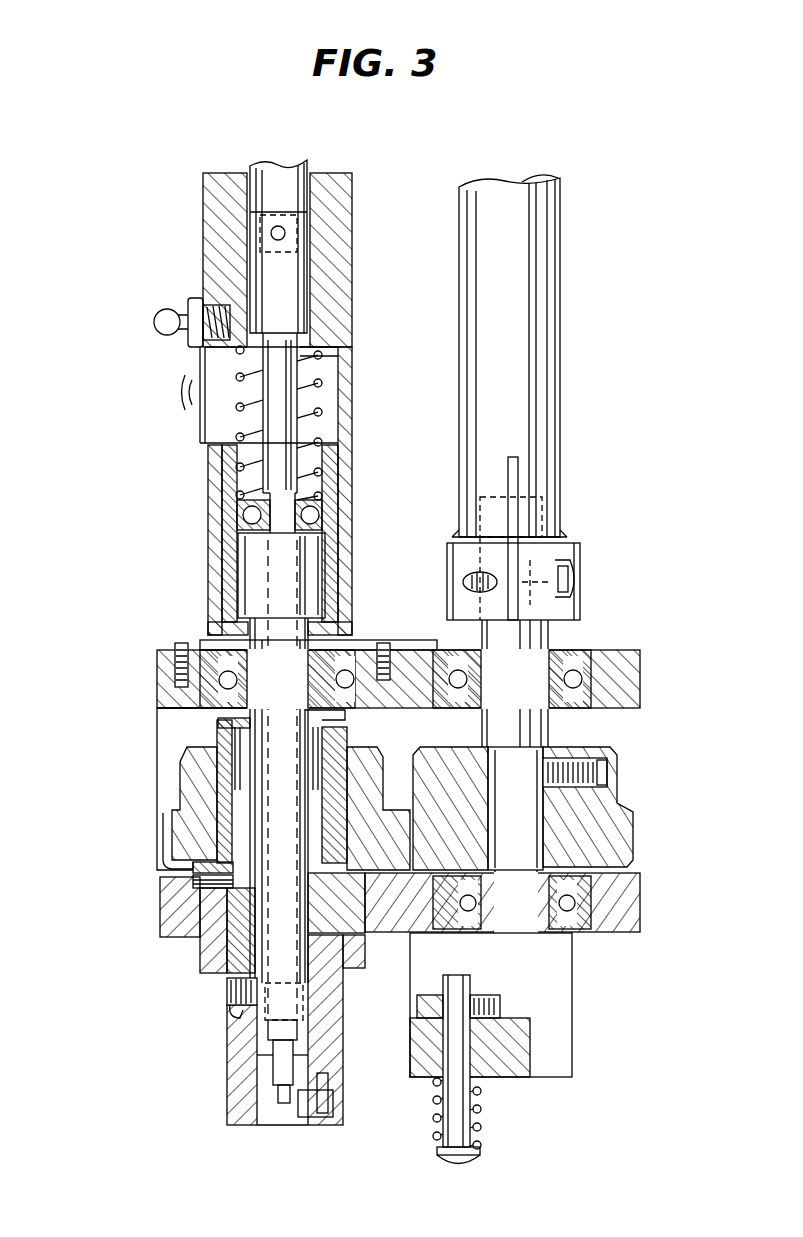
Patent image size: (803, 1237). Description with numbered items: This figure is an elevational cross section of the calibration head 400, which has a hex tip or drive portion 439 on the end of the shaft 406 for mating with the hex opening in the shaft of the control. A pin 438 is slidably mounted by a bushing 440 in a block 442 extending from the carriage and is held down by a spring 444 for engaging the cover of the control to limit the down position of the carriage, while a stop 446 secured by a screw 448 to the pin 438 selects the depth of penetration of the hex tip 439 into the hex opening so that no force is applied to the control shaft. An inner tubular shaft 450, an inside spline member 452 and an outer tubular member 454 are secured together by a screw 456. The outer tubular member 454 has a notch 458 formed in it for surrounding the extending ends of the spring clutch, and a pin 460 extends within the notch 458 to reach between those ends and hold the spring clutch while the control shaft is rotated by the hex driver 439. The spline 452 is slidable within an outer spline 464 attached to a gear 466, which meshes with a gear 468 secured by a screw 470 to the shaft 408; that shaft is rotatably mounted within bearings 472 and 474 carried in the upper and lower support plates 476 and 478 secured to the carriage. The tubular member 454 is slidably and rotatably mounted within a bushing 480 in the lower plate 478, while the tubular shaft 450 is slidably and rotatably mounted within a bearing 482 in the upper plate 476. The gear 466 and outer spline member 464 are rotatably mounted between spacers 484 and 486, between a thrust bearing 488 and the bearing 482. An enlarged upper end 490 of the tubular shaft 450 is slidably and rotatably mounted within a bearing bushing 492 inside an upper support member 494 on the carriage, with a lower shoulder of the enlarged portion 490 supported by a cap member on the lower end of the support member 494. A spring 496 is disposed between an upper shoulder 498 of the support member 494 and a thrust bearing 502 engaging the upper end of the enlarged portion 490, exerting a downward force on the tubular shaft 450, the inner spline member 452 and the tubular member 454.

The head 400 is at (107, 967).
The shaft 406 is at (265, 173).
The shaft 408 is at (536, 446).
The pin 438 is at (460, 1157).
The hex tip 439 is at (282, 1103).
The bushing 440 is at (480, 1048).
The block 442 is at (556, 992).
The spring 444 is at (480, 1131).
The stop 446 is at (428, 996).
The screw 448 is at (500, 1000).
The inner tubular shaft 450 is at (305, 1001).
The inside spline member 452 is at (247, 955).
The outer tubular member 454 is at (238, 1095).
The screw 456 is at (230, 1015).
The notch 458 is at (308, 1118).
The pin 460 is at (333, 1105).
The outer spline 464 is at (227, 767).
The gear 466 is at (195, 828).
The gear 468 is at (622, 835).
The screw 470 is at (580, 773).
The bearing 472 is at (575, 672).
The bearing 474 is at (568, 912).
The upper support plate 476 is at (627, 682).
The lower support plate 478 is at (625, 905).
The bushing 480 is at (232, 936).
The bearing 482 is at (225, 683).
The spacer 484 is at (215, 725).
The spacer 486 is at (197, 870).
The thrust bearing 488 is at (213, 884).
The upper end 490 is at (320, 597).
The bearing bushing 492 is at (340, 557).
The upper support member 494 is at (352, 413).
The spring 496 is at (335, 383).
The upper shoulder 498 is at (343, 357).
The thrust bearing 502 is at (312, 518).